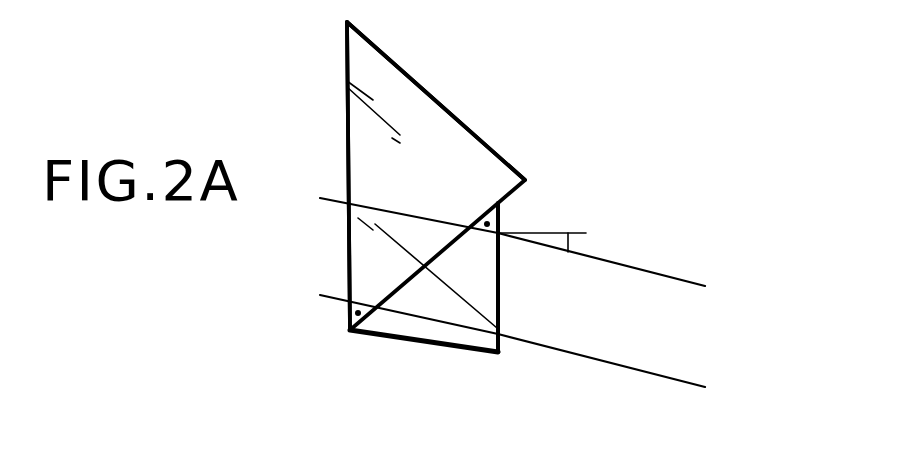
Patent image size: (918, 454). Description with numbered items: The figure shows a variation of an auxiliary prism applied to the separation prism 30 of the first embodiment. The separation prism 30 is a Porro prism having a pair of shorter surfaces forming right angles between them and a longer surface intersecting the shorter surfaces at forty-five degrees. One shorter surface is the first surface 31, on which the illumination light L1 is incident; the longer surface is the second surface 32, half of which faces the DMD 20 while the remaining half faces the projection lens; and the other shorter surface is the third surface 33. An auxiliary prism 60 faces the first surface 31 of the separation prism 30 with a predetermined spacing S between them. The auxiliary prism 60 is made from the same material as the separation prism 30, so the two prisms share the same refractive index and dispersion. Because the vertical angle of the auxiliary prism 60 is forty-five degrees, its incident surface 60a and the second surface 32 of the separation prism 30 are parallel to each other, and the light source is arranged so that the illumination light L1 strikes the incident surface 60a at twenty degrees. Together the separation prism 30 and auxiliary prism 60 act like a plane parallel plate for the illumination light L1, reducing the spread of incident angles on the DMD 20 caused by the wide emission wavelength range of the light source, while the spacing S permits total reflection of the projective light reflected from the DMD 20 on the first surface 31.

The separation prism 30 is at (420, 75).
The first surface 31 is at (358, 336).
The second surface 32 is at (358, 140).
The third surface 33 is at (525, 118).
The spacing S is at (500, 208).
The auxiliary prism 60 is at (448, 343).
The incident surface 60a is at (483, 308).
The DMD 20 is at (573, 245).
The illumination light L1 is at (717, 283).